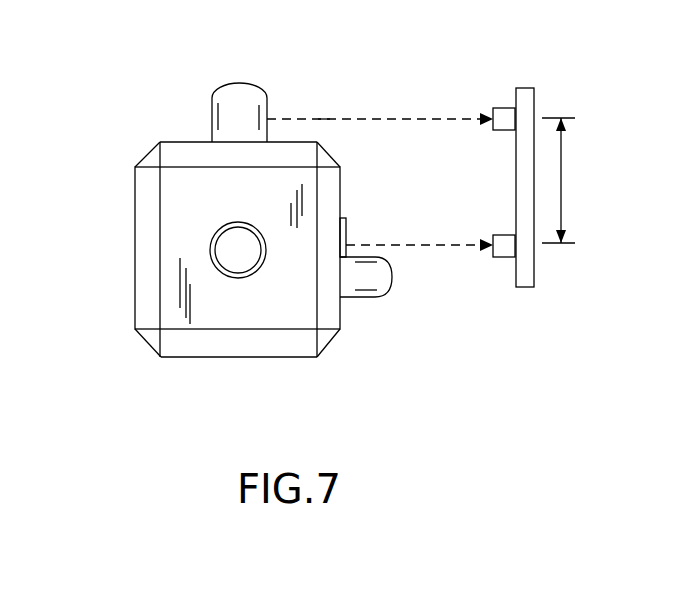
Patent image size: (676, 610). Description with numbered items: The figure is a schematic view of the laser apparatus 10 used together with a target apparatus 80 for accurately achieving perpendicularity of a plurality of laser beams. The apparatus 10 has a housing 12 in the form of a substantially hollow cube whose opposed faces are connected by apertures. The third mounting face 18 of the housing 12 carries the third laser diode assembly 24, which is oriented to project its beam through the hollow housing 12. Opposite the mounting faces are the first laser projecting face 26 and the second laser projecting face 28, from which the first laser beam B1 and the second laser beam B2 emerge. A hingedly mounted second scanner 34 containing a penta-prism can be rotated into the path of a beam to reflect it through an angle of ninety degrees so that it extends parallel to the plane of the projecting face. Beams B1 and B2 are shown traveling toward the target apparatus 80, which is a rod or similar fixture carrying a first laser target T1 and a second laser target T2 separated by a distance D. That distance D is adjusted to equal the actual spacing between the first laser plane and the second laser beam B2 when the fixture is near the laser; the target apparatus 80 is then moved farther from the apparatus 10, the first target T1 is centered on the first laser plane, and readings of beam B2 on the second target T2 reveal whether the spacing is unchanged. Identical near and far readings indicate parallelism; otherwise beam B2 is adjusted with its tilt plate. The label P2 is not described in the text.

The laser apparatus 10 is at (89, 138).
The housing 12 is at (136, 260).
The third mounting face 18 is at (148, 215).
The third laser diode assembly 24 is at (233, 263).
The first laser projecting face 26 is at (342, 313).
The second laser projecting face 28 is at (172, 142).
The second scanner 34 is at (212, 108).
The target apparatus 80 is at (531, 88).
The first laser target T1 is at (500, 257).
The second laser target T2 is at (500, 108).
The first laser beam B1 is at (435, 249).
The second laser beam B2 is at (394, 118).
The beam path P2 is at (324, 118).
The distance between targets D is at (566, 180).